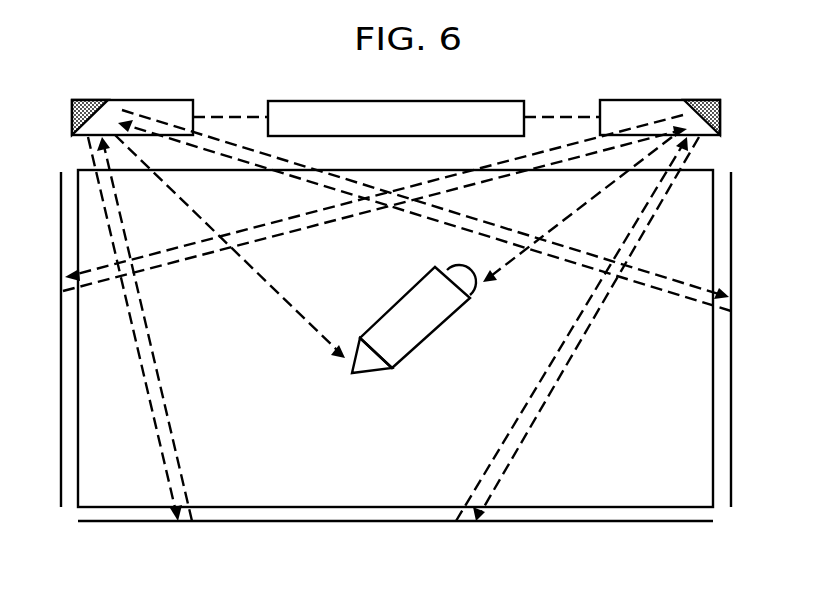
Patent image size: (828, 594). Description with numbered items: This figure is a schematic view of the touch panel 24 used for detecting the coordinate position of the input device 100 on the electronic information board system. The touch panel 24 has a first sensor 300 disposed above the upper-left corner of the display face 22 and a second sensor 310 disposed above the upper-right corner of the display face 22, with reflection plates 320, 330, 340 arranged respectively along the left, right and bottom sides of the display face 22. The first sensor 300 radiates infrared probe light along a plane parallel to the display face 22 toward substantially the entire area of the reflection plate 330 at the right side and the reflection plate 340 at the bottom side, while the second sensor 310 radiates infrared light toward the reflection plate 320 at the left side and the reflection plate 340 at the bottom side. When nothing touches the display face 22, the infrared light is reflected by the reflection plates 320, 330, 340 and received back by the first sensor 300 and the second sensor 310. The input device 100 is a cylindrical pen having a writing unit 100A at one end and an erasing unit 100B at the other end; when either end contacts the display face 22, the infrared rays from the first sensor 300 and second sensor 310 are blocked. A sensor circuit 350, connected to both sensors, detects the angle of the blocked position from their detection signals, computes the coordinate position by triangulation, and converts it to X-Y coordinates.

The display face 22 is at (697, 436).
The touch panel 24 is at (736, 286).
The input device 100 is at (440, 327).
The writing unit 100A is at (373, 367).
The erasing unit 100B is at (447, 267).
The first sensor 300 is at (176, 86).
The second sensor 310 is at (688, 100).
The reflection plate 320 is at (82, 347).
The reflection plate 330 is at (728, 353).
The reflection plate 340 is at (574, 523).
The sensor circuit 350 is at (492, 100).